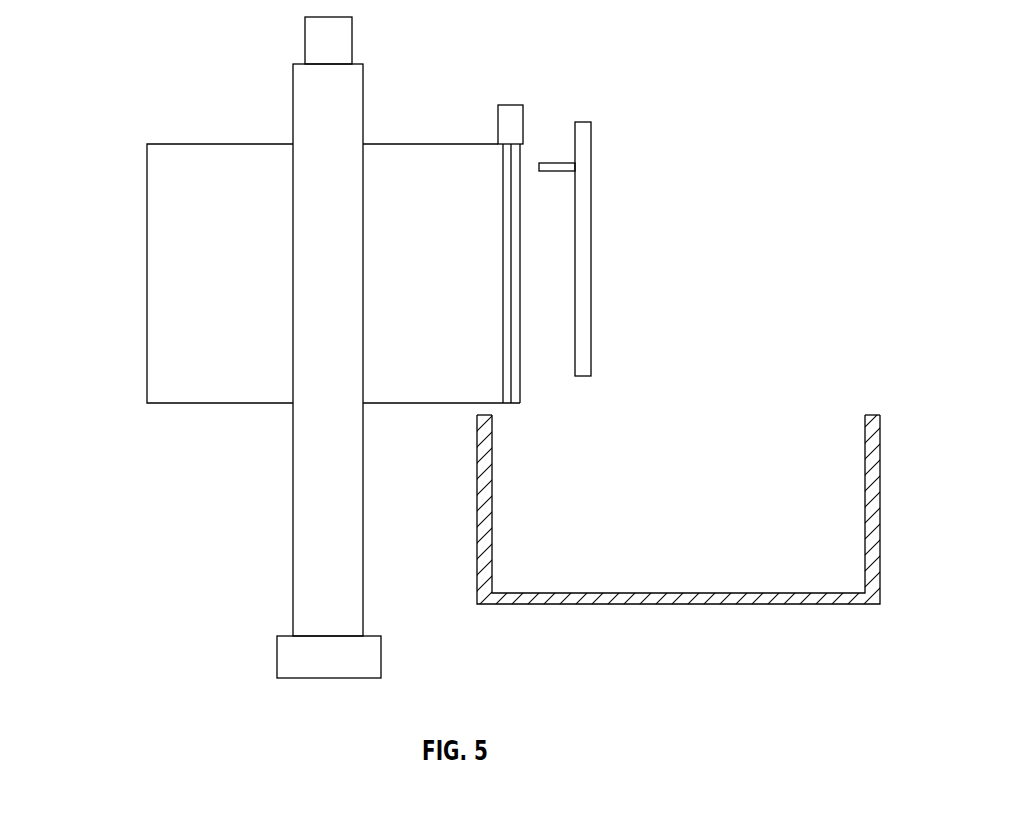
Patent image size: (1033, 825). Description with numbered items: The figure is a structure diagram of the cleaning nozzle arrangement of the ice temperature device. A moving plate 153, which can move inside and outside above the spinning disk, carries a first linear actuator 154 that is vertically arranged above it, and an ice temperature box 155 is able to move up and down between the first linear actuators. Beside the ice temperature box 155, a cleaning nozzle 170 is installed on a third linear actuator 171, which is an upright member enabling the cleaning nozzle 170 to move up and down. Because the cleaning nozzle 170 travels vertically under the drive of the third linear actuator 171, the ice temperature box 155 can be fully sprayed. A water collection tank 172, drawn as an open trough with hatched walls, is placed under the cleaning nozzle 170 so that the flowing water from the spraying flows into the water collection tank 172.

The moving plate 153 is at (266, 631).
The first linear actuator 154 is at (240, 326).
The ice temperature box 155 is at (276, 254).
The cleaning nozzle 170 is at (603, 121).
The third linear actuator 171 is at (644, 249).
The water collection tank 172 is at (660, 488).